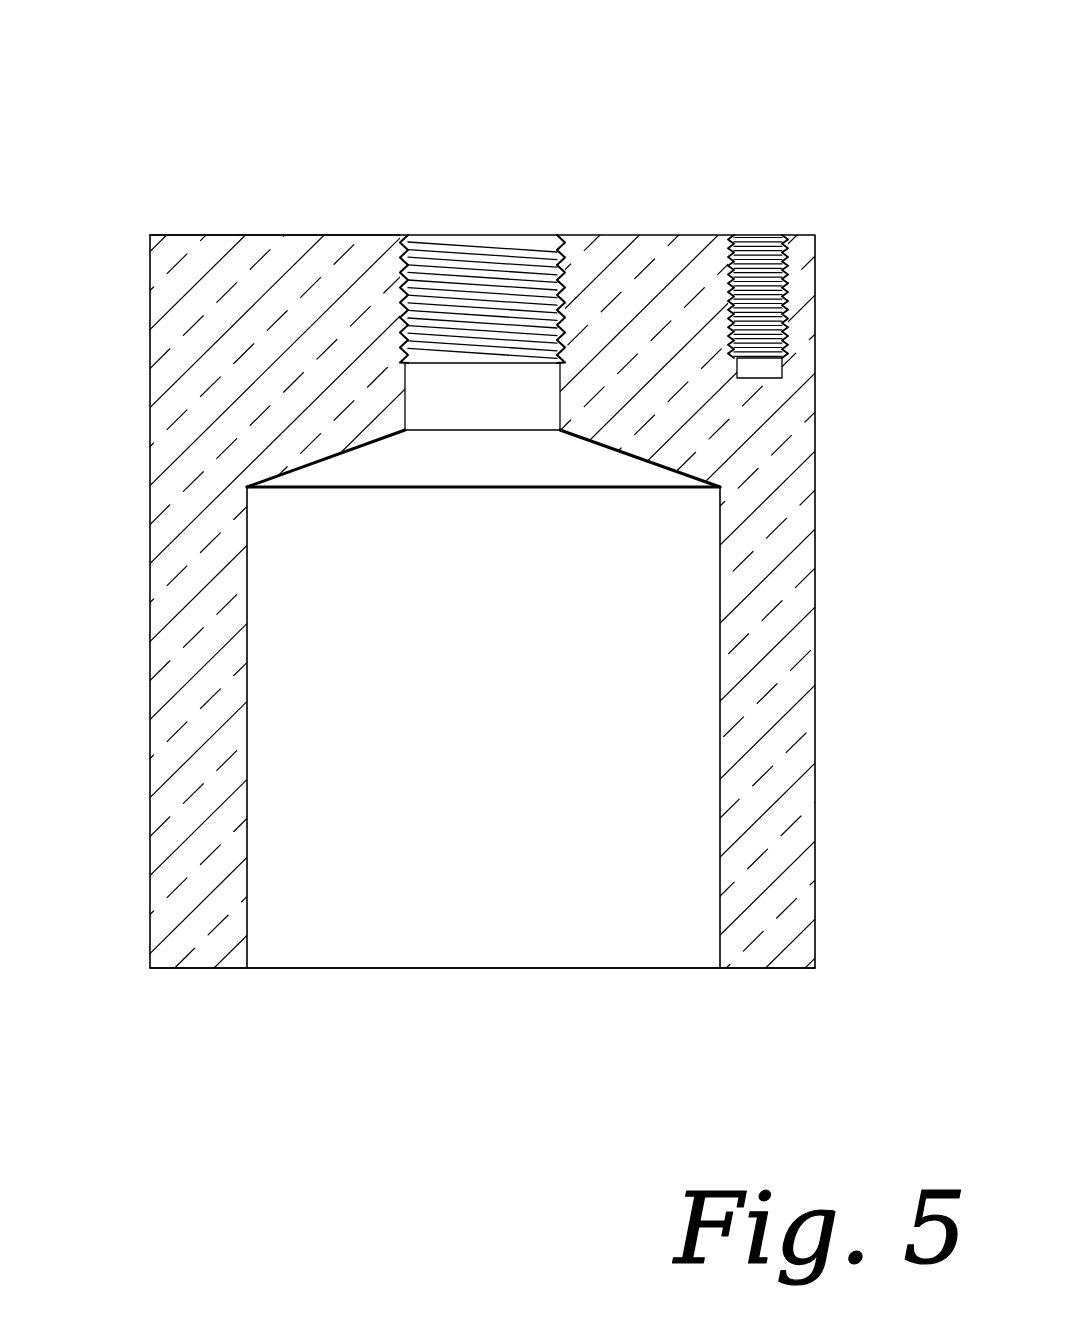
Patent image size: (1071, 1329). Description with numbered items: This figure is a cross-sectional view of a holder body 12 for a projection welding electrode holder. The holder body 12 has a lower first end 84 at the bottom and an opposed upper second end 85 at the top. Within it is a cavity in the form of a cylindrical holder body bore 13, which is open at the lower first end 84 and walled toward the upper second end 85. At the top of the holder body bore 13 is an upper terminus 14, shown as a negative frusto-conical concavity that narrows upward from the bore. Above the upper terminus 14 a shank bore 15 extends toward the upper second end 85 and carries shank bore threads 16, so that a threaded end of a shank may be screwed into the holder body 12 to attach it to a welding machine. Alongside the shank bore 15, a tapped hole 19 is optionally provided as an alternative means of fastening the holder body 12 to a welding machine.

The holder body 12 is at (133, 49).
The holder body bore 13 is at (720, 800).
The upper terminus 14 is at (328, 453).
The shank bore 15 is at (480, 235).
The shank bore threads 16 is at (567, 290).
The tapped hole 19 is at (750, 235).
The lower first end 84 is at (207, 968).
The upper second end 85 is at (223, 235).